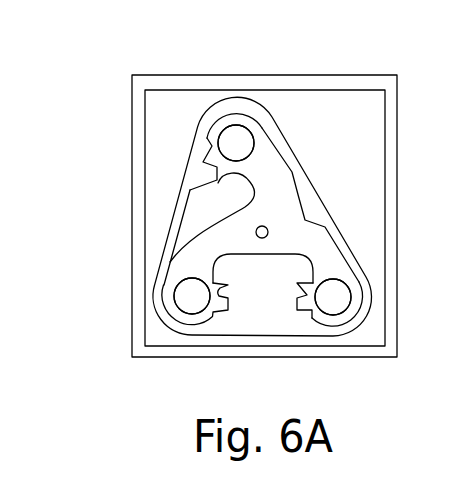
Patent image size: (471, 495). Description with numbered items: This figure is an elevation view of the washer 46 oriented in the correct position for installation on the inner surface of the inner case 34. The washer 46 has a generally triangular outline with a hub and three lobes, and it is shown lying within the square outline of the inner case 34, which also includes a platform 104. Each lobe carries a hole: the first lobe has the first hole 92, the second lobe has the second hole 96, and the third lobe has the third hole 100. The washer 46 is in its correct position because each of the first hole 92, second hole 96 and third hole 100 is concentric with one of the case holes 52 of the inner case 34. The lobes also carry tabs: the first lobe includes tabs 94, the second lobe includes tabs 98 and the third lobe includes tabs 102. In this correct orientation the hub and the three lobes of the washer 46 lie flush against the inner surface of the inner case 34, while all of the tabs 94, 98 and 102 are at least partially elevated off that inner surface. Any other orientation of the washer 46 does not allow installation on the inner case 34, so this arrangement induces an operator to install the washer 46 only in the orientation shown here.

The inner case 34 is at (170, 110).
The washer 46 is at (276, 176).
The case holes 52 is at (247, 145).
The first hole 92 is at (235, 138).
The tabs 94 is at (217, 178).
The second hole 96 is at (190, 300).
The tabs 98 is at (237, 303).
The third hole 100 is at (338, 302).
The tabs 102 is at (297, 287).
The platform 104 is at (170, 217).